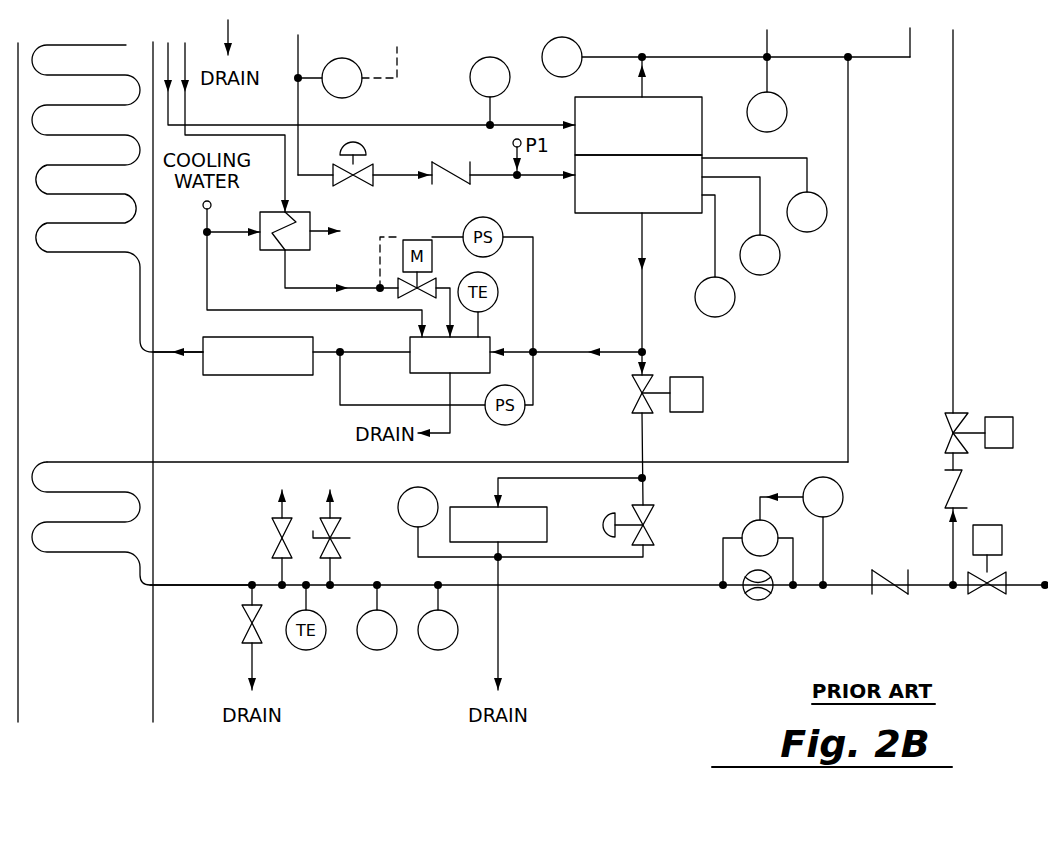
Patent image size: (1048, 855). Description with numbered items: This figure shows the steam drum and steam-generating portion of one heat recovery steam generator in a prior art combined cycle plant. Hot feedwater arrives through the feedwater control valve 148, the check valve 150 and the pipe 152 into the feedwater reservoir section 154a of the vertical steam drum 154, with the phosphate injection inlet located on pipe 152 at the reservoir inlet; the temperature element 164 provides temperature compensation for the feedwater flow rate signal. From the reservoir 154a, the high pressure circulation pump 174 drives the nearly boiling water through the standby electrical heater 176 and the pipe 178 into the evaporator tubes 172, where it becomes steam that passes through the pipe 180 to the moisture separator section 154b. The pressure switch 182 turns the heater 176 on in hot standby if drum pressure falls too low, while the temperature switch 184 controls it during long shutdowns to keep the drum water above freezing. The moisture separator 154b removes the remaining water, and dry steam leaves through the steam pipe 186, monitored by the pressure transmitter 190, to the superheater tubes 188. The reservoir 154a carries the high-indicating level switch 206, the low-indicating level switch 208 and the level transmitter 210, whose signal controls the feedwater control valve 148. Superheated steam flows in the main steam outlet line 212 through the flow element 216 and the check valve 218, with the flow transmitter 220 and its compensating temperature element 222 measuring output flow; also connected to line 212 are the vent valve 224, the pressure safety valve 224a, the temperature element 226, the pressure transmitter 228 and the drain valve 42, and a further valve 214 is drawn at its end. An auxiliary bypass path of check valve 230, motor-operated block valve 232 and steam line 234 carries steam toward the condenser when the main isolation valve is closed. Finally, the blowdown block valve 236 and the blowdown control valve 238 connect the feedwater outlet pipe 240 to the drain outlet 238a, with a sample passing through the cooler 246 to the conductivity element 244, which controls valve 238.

The drain valve 42 is at (242, 622).
The feedwater control valve 148 is at (355, 186).
The check valve 150 is at (455, 182).
The pipe 152 is at (543, 178).
The vertical steam drum 154 is at (654, 168).
The feedwater reservoir section 154a is at (672, 213).
The moisture separator section 154b is at (690, 112).
The temperature element 164 is at (360, 88).
The evaporator tubes 172 is at (78, 256).
The high pressure circulation pump 174 is at (409, 364).
The standby electrical heater 176 is at (274, 375).
The pipe 178 is at (178, 348).
The pipe 180 is at (262, 122).
The pressure switch 182 is at (578, 45).
The steam pipe 186 is at (712, 55).
The temperature switch 184 is at (476, 63).
The superheater tubes 188 is at (104, 555).
The pressure transmitter 190 is at (784, 120).
The high-indicating level switch 206 is at (810, 232).
The low-indicating level switch 208 is at (766, 275).
The level transmitter 210 is at (722, 317).
The main steam outlet line 212 is at (210, 582).
The motor operated valve 214 is at (984, 596).
The flow element 216 is at (750, 600).
The check valve 218 is at (888, 570).
The flow transmitter 220 is at (750, 523).
The temperature element 222 is at (838, 490).
The vent valve 224 is at (274, 535).
The pressure safety valve 224a is at (343, 545).
The temperature element 226 is at (366, 648).
The pressure transmitter 228 is at (434, 649).
The check valve 230 is at (962, 492).
The motor-operated block valve 232 is at (945, 416).
The steam line 234 is at (955, 228).
The blowdown block valve 236 is at (630, 390).
The blowdown control valve 238 is at (652, 514).
The drain outlet 238a is at (500, 636).
The feedwater outlet pipe 240 is at (640, 320).
The conductivity element 244 is at (434, 496).
The cooler 246 is at (548, 520).